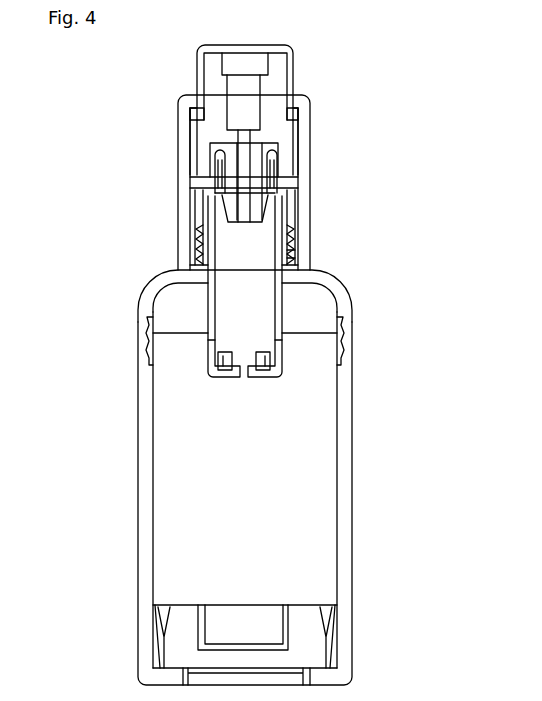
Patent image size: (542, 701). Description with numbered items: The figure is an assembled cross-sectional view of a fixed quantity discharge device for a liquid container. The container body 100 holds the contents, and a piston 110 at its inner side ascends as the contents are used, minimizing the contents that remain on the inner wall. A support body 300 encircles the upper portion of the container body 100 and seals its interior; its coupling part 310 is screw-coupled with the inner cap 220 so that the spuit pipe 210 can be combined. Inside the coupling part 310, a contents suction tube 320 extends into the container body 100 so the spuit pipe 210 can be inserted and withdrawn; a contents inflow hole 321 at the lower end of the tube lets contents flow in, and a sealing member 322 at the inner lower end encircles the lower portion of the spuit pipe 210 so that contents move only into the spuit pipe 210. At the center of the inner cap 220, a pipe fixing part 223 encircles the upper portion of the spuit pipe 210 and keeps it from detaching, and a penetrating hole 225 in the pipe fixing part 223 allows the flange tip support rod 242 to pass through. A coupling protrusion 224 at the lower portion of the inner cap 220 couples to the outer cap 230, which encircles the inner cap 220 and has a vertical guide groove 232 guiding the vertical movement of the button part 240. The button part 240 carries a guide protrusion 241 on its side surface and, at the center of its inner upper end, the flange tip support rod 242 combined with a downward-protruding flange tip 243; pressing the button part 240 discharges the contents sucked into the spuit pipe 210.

The container body 100 is at (342, 498).
The piston 110 is at (328, 633).
The spuit pipe 210 is at (268, 322).
The inner cap 220 is at (297, 223).
The pipe fixing part 223 is at (267, 165).
The coupling protrusion 224 is at (300, 257).
The penetrating hole 225 is at (258, 150).
The outer cap 230 is at (305, 218).
The vertical guide groove 232 is at (300, 173).
The button part 240 is at (287, 70).
The guide protrusion 241 is at (308, 101).
The flange tip support rod 242 is at (250, 155).
The flange tip 243 is at (213, 198).
The support body 300 is at (158, 285).
The coupling part 310 is at (197, 228).
The contents suction tube 320 is at (215, 330).
The contents inflow hole 321 is at (225, 378).
The sealing member 322 is at (225, 365).